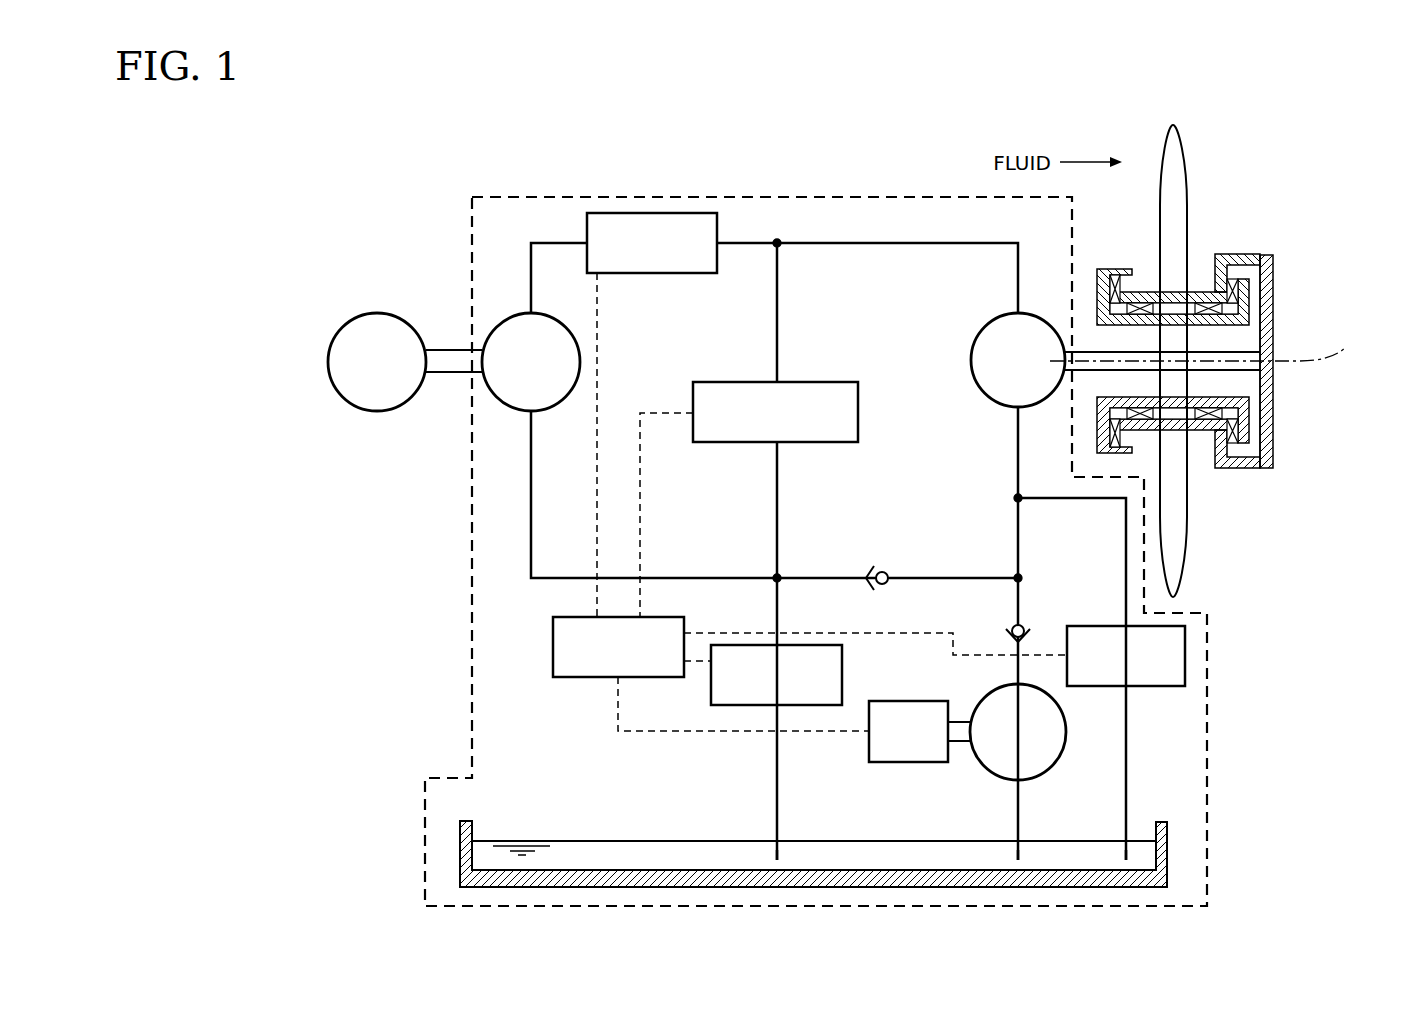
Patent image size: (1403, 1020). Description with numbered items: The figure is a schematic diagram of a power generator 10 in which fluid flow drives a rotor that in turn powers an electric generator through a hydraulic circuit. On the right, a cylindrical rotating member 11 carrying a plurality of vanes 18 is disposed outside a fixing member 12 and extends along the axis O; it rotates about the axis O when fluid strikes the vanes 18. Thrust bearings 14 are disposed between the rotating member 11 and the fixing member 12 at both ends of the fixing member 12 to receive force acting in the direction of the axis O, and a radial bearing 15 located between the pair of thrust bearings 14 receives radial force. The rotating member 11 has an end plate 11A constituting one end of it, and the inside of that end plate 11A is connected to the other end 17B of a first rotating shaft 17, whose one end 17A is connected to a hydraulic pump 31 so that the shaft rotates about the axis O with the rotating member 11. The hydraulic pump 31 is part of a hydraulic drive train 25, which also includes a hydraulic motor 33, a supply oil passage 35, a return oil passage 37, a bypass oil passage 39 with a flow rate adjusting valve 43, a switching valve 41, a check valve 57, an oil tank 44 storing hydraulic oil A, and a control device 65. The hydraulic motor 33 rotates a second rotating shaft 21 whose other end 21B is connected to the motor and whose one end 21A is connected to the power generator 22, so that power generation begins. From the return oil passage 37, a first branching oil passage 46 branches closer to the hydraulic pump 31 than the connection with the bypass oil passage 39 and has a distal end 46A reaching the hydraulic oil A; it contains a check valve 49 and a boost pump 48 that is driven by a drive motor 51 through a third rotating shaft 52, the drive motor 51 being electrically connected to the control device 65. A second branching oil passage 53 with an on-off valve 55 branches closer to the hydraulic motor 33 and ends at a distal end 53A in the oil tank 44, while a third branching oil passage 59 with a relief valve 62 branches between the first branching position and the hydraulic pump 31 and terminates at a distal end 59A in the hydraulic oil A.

The power generator 10 is at (340, 119).
The hydraulic drive train 25 is at (541, 196).
The power generator 22 is at (378, 313).
The second rotating shaft 21 is at (448, 342).
The one end of the second rotating shaft 21A is at (438, 372).
The other end of the second rotating shaft 21B is at (478, 363).
The hydraulic motor 33 is at (500, 315).
The switching valve 41 is at (648, 213).
The supply oil passage 35 is at (816, 243).
The bypass oil passage 39 is at (777, 322).
The flow rate adjusting valve 43 is at (858, 414).
The hydraulic pump 31 is at (985, 318).
The return oil passage 37 is at (804, 578).
The check valve 57 is at (886, 568).
The first branching oil passage 46 is at (1022, 580).
The check valve 49 is at (1008, 632).
The third branching oil passage 59 is at (1128, 606).
The relief valve 62 is at (1185, 655).
The control device 65 is at (590, 677).
The on-off valve 55 is at (843, 675).
The second branching oil passage 53 is at (778, 605).
The drive motor 51 is at (906, 763).
The third rotating shaft 52 is at (961, 743).
The boost pump 48 is at (1052, 762).
The oil tank 44 is at (1162, 852).
The distal end of the second branching oil passage 53A is at (780, 862).
The hydraulic oil A is at (912, 856).
The distal end of the first branching oil passage 46A is at (1020, 862).
The distal end of the third branching oil passage 59A is at (1130, 862).
The fixing member 12 is at (1243, 293).
The rotating member 11 is at (1285, 337).
The end plate 11A is at (1268, 320).
The radial bearing 15 is at (1210, 296).
The thrust bearing 14 is at (1115, 277).
The vanes 18 is at (1195, 203).
The first rotating shaft 17 is at (1260, 376).
The one end of the first rotating shaft 17A is at (1082, 370).
The other end of the first rotating shaft 17B is at (1240, 370).
The axis O is at (1213, 343).